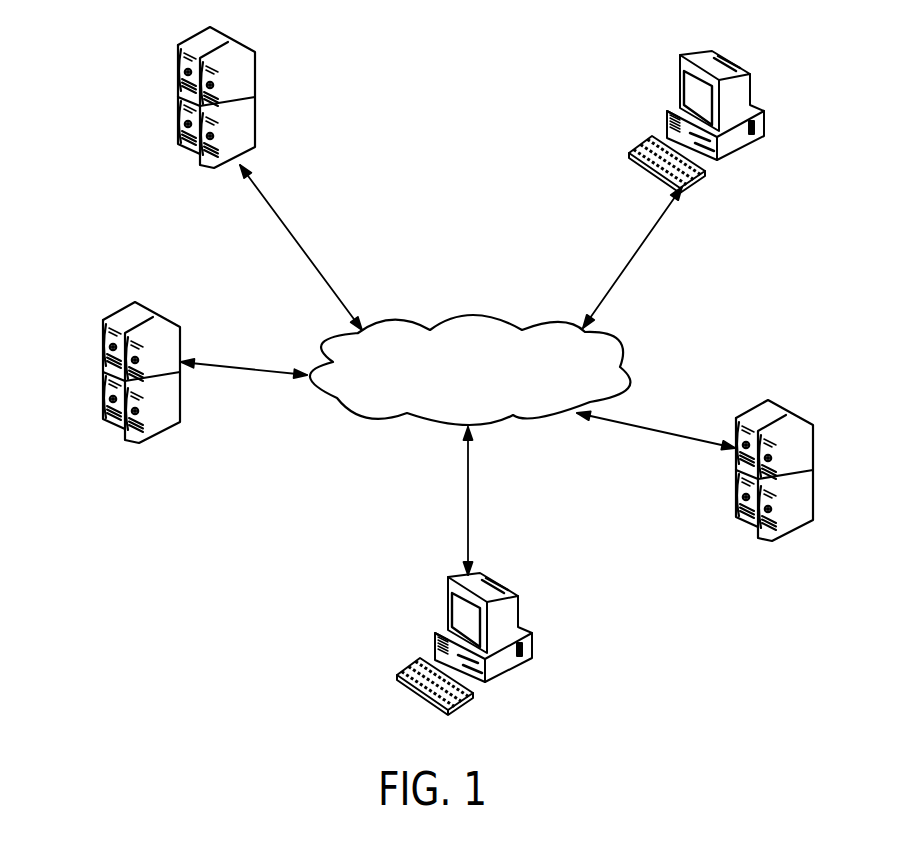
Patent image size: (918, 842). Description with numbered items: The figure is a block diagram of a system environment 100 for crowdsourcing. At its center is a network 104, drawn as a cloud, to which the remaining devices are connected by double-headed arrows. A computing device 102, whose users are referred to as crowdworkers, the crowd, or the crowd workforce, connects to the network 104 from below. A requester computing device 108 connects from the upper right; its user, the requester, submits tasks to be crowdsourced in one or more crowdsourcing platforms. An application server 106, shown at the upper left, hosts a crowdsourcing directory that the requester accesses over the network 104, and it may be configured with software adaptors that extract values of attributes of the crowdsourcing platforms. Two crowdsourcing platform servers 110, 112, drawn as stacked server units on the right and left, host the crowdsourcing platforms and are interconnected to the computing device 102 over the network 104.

The system environment 100 is at (423, 138).
The computing device 102 is at (447, 583).
The network 104 is at (470, 318).
The application server 106 is at (178, 99).
The requester computing device 108 is at (768, 126).
The crowdsourcing platform server 110 is at (777, 540).
The crowdsourcing platform server 112 is at (102, 390).